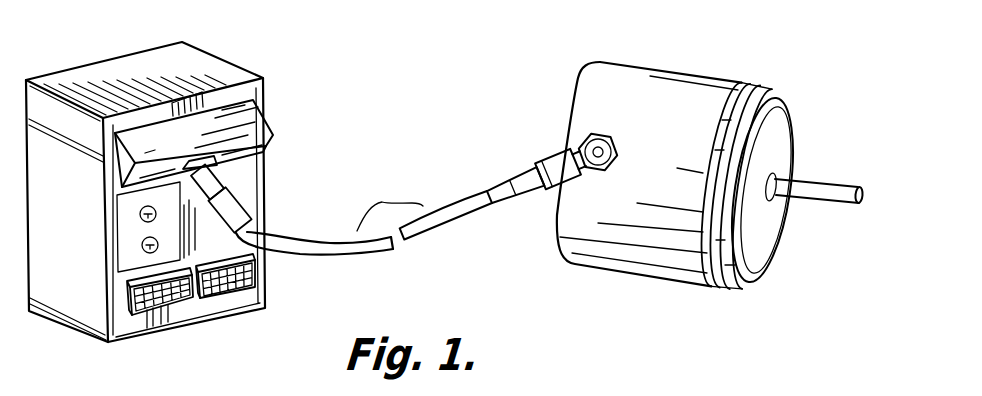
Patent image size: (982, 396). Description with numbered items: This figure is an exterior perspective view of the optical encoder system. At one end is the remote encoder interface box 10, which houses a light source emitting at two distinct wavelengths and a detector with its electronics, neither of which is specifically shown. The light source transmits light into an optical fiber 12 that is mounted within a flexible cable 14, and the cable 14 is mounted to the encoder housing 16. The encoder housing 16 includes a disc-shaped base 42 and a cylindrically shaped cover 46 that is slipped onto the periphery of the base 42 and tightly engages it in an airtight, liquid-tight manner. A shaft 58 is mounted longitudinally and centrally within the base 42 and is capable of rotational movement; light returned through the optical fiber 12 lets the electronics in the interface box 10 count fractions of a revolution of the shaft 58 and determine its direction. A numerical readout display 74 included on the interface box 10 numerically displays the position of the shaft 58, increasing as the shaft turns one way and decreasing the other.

The remote encoder interface box 10 is at (234, 72).
The optical fiber 12 is at (393, 239).
The flexible cable 14 is at (472, 196).
The encoder housing 16 is at (728, 76).
The base 42 is at (773, 253).
The cover 46 is at (655, 67).
The shaft 58 is at (828, 181).
The numerical readout display 74 is at (218, 300).